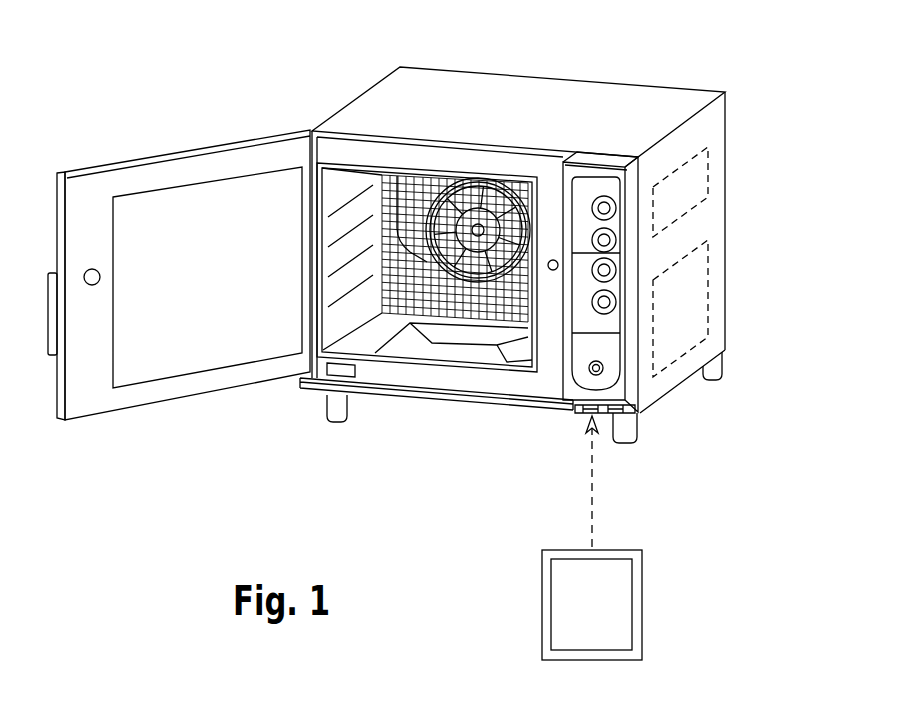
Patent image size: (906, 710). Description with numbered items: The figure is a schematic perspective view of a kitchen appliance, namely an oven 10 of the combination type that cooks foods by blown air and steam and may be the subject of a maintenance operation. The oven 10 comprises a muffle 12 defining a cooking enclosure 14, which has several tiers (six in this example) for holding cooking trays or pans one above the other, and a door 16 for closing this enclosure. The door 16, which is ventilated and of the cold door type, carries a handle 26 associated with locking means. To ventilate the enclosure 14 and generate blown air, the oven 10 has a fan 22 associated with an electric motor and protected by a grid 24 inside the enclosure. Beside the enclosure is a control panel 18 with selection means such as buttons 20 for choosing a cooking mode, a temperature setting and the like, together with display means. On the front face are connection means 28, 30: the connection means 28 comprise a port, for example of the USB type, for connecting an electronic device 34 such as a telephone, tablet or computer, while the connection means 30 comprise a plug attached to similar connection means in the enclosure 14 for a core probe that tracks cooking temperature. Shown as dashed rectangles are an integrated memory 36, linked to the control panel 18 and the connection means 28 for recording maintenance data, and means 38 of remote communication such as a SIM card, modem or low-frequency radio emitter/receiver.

The oven 10 is at (741, 112).
The muffle 12 is at (505, 160).
The cooking enclosure 14 is at (408, 342).
The door 16 is at (202, 142).
The control panel 18 is at (670, 226).
The buttons 20 is at (612, 210).
The fan 22 is at (447, 177).
The grid 24 is at (393, 180).
The handle 26 is at (50, 298).
The connection means 28 is at (572, 412).
The connection means 30 is at (622, 425).
The electronic device 34 is at (567, 600).
The integrated memory 36 is at (710, 306).
The means of remote communication 38 is at (708, 162).